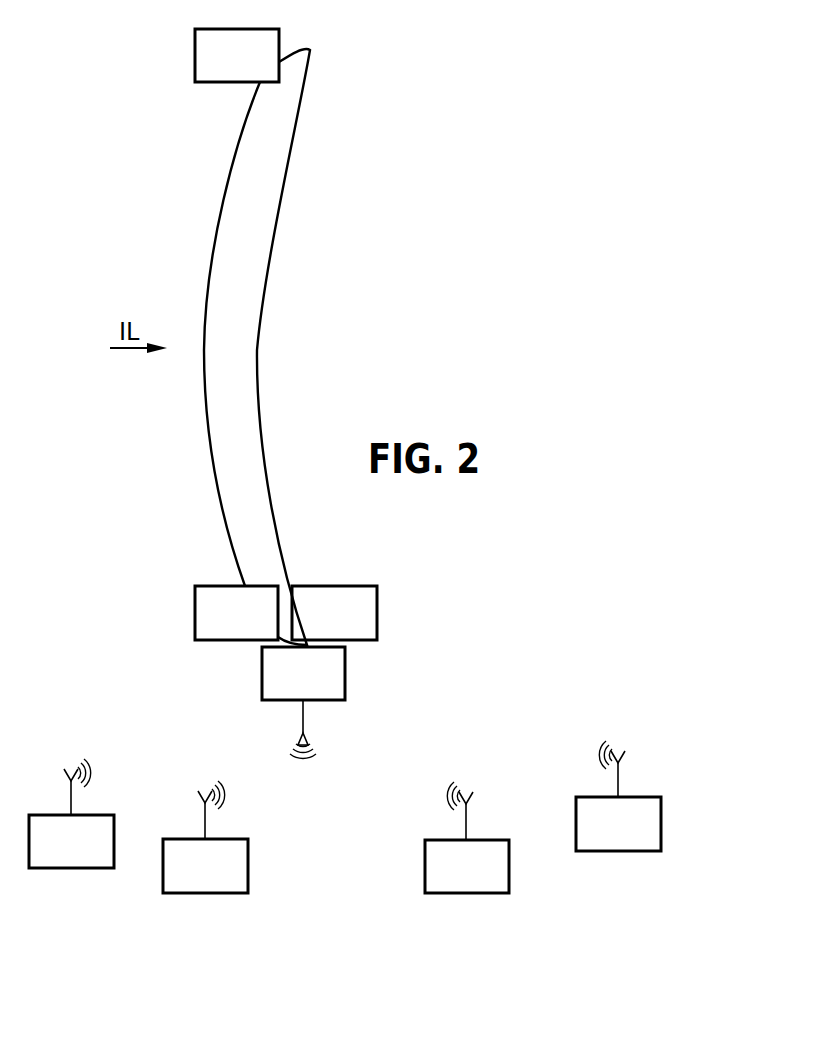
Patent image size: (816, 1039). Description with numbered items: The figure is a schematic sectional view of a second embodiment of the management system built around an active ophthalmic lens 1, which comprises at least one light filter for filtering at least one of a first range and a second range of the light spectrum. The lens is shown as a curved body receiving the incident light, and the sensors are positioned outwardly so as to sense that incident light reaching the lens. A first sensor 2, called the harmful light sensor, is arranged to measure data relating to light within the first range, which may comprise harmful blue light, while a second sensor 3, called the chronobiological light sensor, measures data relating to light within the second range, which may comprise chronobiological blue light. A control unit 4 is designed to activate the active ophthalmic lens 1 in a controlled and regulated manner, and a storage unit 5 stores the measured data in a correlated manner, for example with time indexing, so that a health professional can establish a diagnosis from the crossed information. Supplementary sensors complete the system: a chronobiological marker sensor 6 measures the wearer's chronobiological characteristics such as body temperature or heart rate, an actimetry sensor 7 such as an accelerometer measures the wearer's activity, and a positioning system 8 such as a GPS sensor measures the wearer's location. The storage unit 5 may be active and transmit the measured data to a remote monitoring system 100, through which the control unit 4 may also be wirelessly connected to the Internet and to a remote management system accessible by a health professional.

The active ophthalmic lens 1 is at (226, 166).
The first sensor 2 is at (195, 42).
The second sensor 3 is at (195, 623).
The control unit 4 is at (262, 688).
The storage unit 5 is at (377, 625).
The chronobiological marker sensor 6 is at (114, 830).
The actimetry sensor 7 is at (248, 855).
The positioning system 8 is at (425, 853).
The remote monitoring system 100 is at (661, 812).